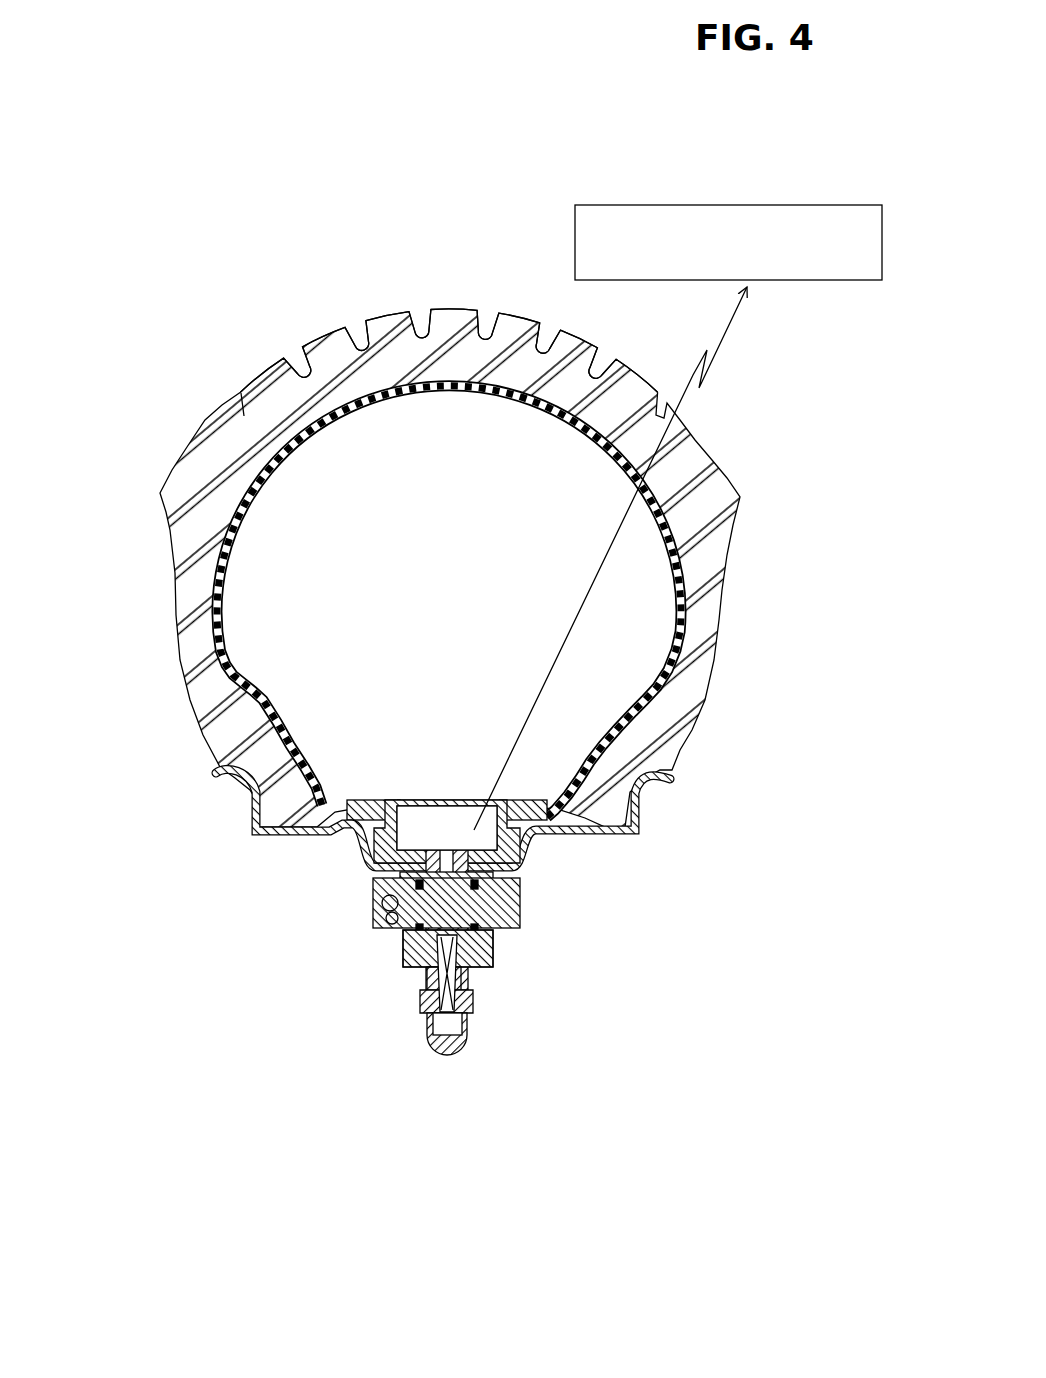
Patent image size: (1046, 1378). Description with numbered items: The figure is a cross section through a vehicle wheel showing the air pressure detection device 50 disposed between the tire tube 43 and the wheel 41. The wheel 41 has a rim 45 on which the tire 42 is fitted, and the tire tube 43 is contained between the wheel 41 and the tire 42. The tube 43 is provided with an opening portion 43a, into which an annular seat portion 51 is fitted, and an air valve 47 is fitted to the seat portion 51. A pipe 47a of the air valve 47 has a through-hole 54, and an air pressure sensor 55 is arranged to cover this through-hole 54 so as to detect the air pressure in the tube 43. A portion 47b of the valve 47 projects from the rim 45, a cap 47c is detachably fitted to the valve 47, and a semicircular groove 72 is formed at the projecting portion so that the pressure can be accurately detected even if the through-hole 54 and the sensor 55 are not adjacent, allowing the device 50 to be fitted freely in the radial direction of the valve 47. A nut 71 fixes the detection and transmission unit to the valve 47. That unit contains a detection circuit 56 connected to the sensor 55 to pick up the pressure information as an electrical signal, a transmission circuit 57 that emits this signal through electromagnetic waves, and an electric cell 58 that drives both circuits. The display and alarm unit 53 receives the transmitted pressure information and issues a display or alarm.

The air pressure detection device 50 is at (195, 248).
The wheel 41 is at (678, 790).
The tire 42 is at (320, 353).
The tire tube 43 is at (427, 388).
The opening portion 43a is at (405, 800).
The rim 45 is at (643, 822).
The air valve 47 is at (430, 840).
The pipe 47a is at (450, 852).
The portion projecting from the rim 47b is at (428, 976).
The cap 47c is at (453, 1053).
The annular seat portion 51 is at (513, 800).
The display and alarm unit 53 is at (655, 282).
The through-hole 54 is at (403, 960).
The air pressure sensor 55 is at (390, 925).
The detection circuit 56 is at (520, 893).
The transmission circuit 57 is at (520, 910).
The electric cell 58 is at (495, 947).
The nut 71 is at (490, 967).
The semicircular groove 72 is at (513, 927).